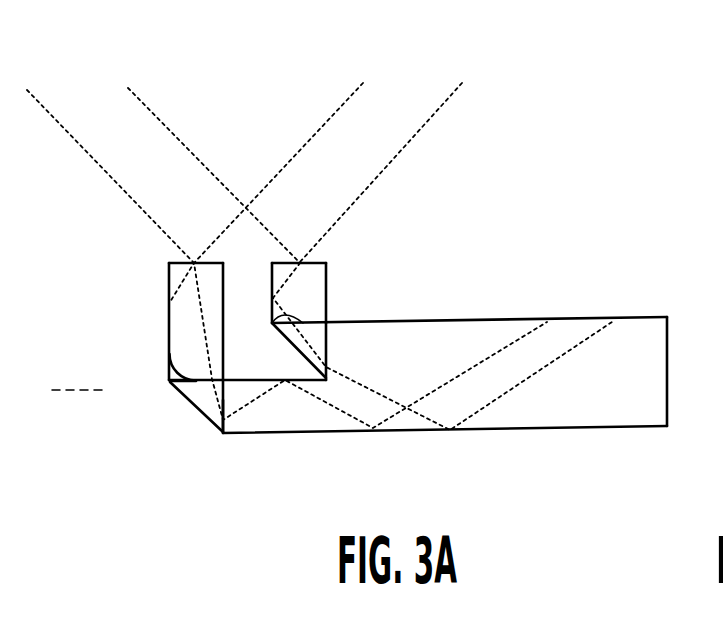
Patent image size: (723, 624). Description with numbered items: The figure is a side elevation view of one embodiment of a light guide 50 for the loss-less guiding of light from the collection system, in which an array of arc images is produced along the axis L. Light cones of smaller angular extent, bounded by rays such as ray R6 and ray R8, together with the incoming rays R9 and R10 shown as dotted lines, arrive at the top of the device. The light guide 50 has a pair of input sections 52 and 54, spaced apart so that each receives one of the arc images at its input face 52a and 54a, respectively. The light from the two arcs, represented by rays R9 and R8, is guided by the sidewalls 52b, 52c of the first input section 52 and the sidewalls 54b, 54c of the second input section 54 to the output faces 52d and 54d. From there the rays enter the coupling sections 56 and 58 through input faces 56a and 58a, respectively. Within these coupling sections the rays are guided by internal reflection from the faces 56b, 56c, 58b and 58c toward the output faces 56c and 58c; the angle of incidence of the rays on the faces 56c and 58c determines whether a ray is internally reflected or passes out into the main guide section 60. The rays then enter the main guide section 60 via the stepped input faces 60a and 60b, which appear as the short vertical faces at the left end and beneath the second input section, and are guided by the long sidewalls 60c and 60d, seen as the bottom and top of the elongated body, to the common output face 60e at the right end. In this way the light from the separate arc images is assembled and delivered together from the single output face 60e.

The ray R6 is at (55, 120).
The ray R8 is at (445, 102).
The ray R9 is at (340, 110).
The light ray R10 is at (157, 118).
The light guide 50 is at (538, 177).
The input section 52 is at (167, 303).
The input face 52a is at (183, 263).
The sidewall 52b is at (168, 288).
The sidewall 52c is at (223, 270).
The output face 52d is at (170, 355).
The input section 54 is at (329, 362).
The input face 54a is at (315, 262).
The sidewall 54b is at (272, 300).
The sidewall 54c is at (327, 302).
The output face 54d is at (270, 318).
The coupling section 56 is at (151, 424).
The input face 56a is at (175, 385).
The face 56b is at (197, 407).
The output face 56c is at (212, 430).
The coupling section 58 is at (276, 329).
The input face 58a is at (282, 338).
The face 58b is at (303, 335).
The output face 58c is at (318, 365).
The main guide section 60 is at (461, 384).
The stepped input face 60a is at (232, 435).
The stepped input face 60b is at (328, 340).
The sidewall 60c is at (607, 427).
The sidewall 60d is at (575, 318).
The common output face 60e is at (668, 370).
The axis L is at (73, 390).